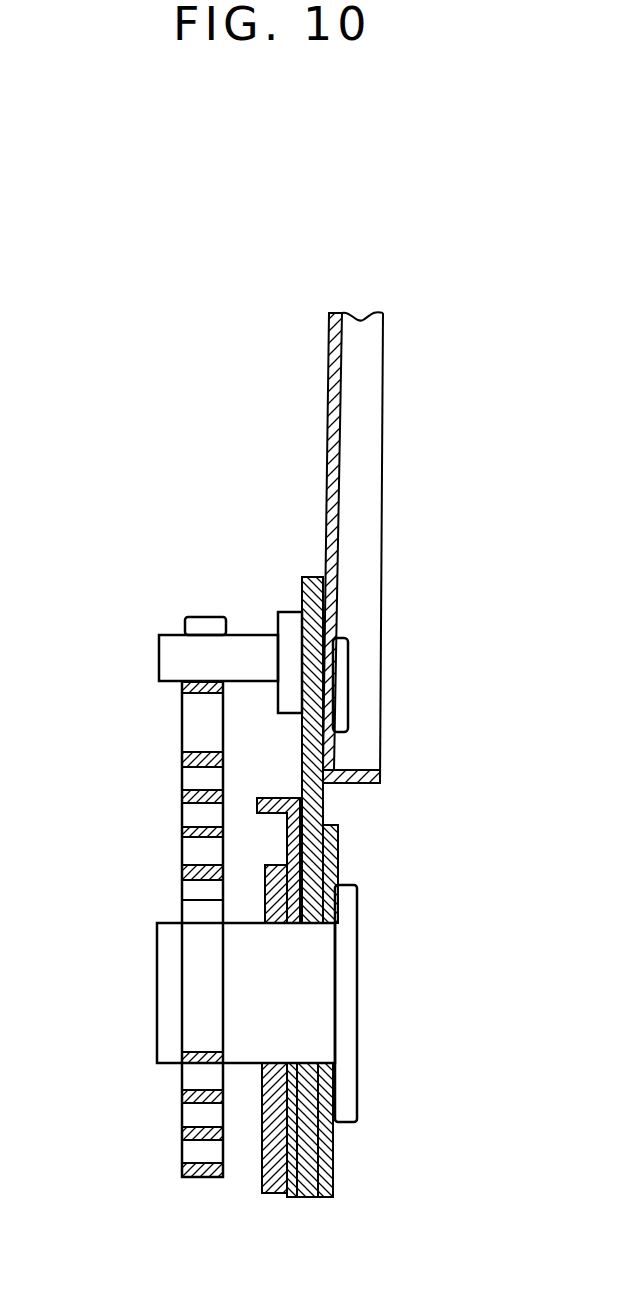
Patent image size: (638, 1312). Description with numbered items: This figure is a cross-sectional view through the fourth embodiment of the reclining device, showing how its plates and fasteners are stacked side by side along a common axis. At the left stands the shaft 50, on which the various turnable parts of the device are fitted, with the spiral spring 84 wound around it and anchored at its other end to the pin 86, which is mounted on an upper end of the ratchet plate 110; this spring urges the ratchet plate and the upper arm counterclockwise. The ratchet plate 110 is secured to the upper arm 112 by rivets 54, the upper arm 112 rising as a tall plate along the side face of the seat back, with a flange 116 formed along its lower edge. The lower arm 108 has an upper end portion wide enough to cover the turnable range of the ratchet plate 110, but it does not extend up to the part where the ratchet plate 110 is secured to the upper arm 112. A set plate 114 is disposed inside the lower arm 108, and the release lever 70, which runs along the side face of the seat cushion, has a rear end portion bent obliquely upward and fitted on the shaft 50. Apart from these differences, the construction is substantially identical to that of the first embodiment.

The shaft 50 is at (167, 994).
The rivets 54 is at (340, 678).
The release lever 70 is at (263, 1163).
The spiral spring 84 is at (181, 828).
The pin 86 is at (250, 649).
The lower arm 108 is at (287, 1170).
The ratchet plate 110 is at (315, 897).
The upper arm 112 is at (367, 428).
The set plate 114 is at (333, 1165).
The flange 116 is at (353, 783).